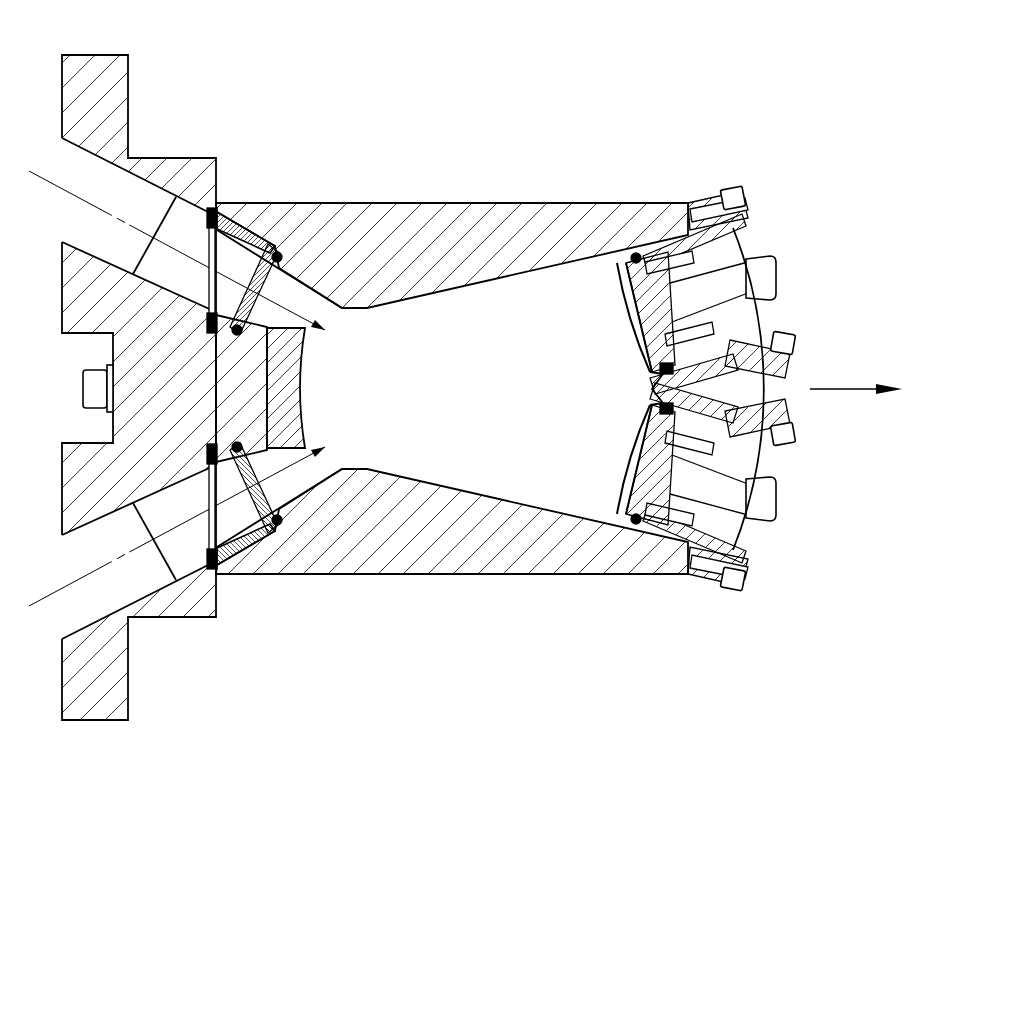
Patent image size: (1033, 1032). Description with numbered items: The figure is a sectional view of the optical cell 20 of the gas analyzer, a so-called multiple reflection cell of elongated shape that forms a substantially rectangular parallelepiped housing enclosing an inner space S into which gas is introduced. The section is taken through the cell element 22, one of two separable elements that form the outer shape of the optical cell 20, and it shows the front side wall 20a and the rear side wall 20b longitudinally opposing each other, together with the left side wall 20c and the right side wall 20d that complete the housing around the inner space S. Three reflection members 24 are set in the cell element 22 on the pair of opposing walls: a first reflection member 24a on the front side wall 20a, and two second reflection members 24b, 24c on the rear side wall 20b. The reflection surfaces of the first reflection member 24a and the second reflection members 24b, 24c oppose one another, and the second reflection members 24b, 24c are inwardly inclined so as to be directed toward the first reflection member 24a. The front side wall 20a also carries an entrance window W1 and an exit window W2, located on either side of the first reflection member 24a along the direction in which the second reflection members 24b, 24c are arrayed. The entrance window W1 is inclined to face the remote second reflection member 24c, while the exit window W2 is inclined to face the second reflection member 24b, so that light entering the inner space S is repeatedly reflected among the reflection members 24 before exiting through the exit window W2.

The optical cell 20 is at (715, 89).
The cell element 22 is at (393, 203).
The front side wall 20a is at (308, 425).
The rear side wall 20b is at (653, 388).
The left side wall 20c is at (411, 557).
The right side wall 20d is at (490, 223).
The reflection members 24 is at (471, 388).
The first reflection member 24a is at (305, 370).
The second reflection member 24b is at (637, 313).
The second reflection member 24c is at (638, 455).
The entrance window W1 is at (278, 252).
The exit window W2 is at (280, 527).
The inner space S is at (477, 396).